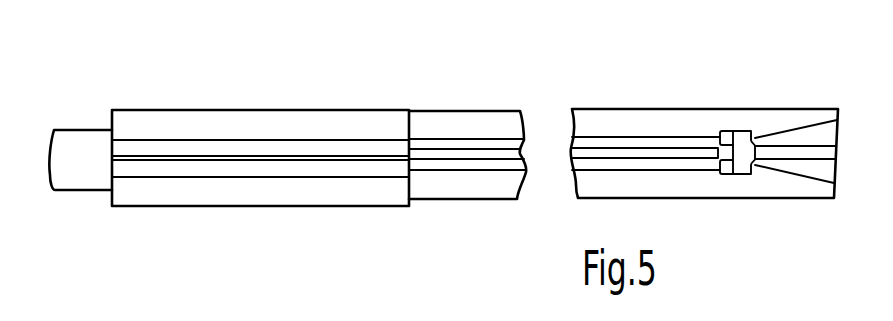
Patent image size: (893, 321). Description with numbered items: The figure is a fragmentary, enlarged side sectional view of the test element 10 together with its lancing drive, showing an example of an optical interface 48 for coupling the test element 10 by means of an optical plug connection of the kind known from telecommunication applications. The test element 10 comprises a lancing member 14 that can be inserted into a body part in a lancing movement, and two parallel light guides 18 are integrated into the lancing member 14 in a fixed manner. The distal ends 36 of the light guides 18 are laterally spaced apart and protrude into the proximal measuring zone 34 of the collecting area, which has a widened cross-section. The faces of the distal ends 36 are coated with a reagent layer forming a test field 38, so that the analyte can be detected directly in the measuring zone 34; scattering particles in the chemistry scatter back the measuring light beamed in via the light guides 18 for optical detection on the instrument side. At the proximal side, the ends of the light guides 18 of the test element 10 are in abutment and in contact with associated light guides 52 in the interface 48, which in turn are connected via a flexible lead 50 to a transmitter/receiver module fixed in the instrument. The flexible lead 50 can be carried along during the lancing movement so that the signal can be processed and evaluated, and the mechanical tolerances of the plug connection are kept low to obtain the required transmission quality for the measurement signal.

The test element 10 is at (470, 200).
The lancing member 14 is at (618, 110).
The light guide 18 is at (457, 163).
The measuring zone 34 is at (753, 138).
The distal end of the light guide 36 is at (720, 128).
The test field 38 is at (735, 173).
The optical interface 48 is at (262, 197).
The flexible lead 50 is at (88, 181).
The light guide of the interface 52 is at (315, 168).